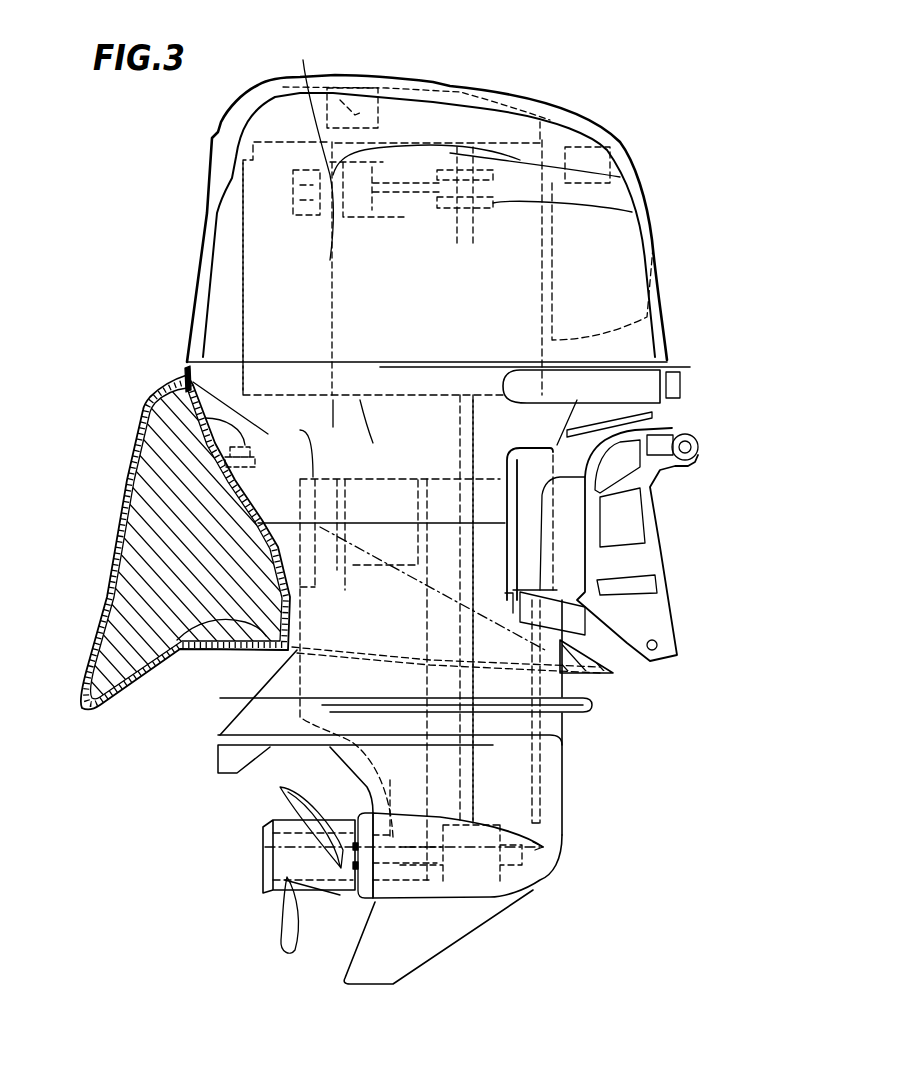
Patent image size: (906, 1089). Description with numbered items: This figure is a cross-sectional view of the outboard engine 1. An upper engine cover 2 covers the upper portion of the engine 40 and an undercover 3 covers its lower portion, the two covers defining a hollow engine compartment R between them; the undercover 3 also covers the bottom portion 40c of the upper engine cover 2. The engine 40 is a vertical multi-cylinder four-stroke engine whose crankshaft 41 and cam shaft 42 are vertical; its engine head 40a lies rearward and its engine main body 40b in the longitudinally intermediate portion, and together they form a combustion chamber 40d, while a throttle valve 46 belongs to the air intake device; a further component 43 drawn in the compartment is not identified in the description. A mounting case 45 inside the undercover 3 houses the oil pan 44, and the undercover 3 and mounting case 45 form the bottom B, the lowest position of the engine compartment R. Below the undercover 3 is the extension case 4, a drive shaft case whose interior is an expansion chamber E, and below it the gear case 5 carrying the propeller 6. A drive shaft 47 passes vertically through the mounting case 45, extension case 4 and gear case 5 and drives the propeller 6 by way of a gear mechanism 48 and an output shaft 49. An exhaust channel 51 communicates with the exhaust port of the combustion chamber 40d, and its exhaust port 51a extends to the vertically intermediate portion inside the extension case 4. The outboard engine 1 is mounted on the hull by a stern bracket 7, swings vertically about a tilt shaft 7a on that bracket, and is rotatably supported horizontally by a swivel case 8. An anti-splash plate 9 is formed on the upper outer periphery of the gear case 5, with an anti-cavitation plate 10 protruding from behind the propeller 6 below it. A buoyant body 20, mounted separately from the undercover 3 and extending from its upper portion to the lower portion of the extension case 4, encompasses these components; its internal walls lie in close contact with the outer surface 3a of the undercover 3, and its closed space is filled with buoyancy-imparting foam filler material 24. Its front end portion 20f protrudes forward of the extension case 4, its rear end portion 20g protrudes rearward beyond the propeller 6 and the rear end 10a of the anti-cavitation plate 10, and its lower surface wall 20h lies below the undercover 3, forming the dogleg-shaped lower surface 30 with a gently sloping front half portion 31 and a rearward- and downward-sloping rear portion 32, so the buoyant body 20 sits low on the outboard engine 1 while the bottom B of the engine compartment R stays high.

The outboard engine 1 is at (392, 517).
The upper engine cover 2 is at (599, 112).
The undercover 3 is at (411, 409).
The outer surface 3a is at (235, 430).
The extension case 4 is at (367, 645).
The gear case 5 is at (571, 832).
The propeller 6 is at (282, 932).
The stern bracket 7 is at (673, 536).
The tilt shaft 7a is at (698, 440).
The swivel case 8 is at (545, 541).
The anti-splash plate 9 is at (583, 705).
The anti-cavitation plate 10 is at (495, 748).
The rear end 10a is at (258, 685).
The buoyant body 20 is at (93, 588).
The front end portion 20f is at (613, 672).
The rear end portion 20g is at (77, 706).
The lower surface wall 20h is at (150, 660).
The buoyancy-imparting filler material 24 is at (160, 500).
The lower surface 30 is at (259, 667).
The front half portion 31 is at (231, 664).
The rear portion 32 is at (125, 705).
The engine 40 is at (527, 266).
The engine head 40a is at (243, 280).
The engine main body 40b is at (543, 311).
The bottom portion 40c is at (400, 643).
The combustion chamber 40d is at (303, 60).
The crankshaft 41 is at (632, 212).
The cam shaft 42 is at (297, 185).
The electrical component 43 is at (397, 173).
The oil pan 44 is at (390, 567).
The mounting case 45 is at (186, 377).
The throttle valve 46 is at (354, 91).
The drive shaft 47 is at (478, 435).
The gear mechanism 48 is at (472, 863).
The output shaft 49 is at (410, 865).
The exhaust channel 51 is at (288, 548).
The exhaust port 51a is at (268, 740).
The engine compartment R is at (226, 256).
The bottom B is at (153, 407).
The expansion chamber E is at (446, 673).